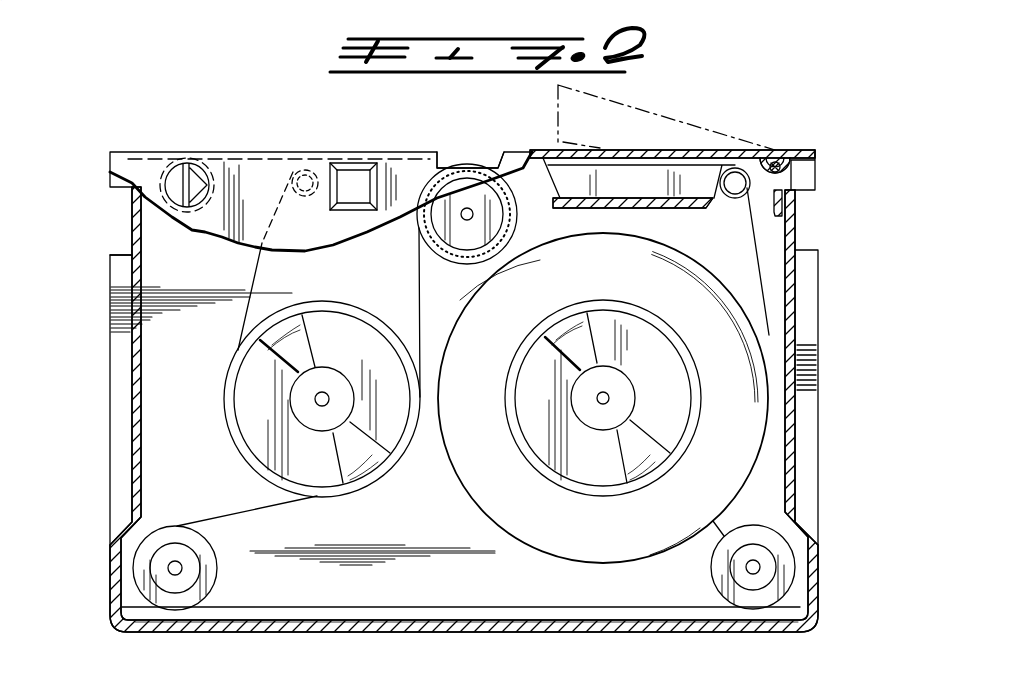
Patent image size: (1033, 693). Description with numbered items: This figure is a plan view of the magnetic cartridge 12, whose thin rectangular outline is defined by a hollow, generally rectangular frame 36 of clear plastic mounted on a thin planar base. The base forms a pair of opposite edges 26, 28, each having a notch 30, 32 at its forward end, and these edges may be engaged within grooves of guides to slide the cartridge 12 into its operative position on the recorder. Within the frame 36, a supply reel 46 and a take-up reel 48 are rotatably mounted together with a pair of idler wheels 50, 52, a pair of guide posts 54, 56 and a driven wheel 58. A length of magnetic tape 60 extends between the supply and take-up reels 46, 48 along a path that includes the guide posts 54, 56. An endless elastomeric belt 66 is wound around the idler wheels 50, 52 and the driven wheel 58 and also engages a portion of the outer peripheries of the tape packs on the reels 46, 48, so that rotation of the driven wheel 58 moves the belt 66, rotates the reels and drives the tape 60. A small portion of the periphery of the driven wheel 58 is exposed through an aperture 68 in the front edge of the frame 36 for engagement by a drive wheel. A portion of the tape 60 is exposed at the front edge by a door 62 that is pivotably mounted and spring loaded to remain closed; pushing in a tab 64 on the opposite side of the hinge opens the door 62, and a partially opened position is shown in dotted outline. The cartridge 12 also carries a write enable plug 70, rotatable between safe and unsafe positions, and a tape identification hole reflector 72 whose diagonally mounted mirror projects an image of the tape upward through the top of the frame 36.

The magnetic cartridge 12 is at (323, 150).
The opposite edge 26 is at (806, 336).
The opposite edge 28 is at (110, 350).
The notch 30 is at (805, 247).
The notch 32 is at (118, 252).
The rectangular frame 36 is at (503, 612).
The supply reel 46 is at (610, 310).
The take-up reel 48 is at (340, 308).
The idler wheel 50 is at (796, 573).
The idler wheel 52 is at (137, 583).
The guide post 54 is at (735, 180).
The guide post 56 is at (283, 158).
The driven wheel 58 is at (467, 162).
The magnetic tape 60 is at (762, 295).
The door 62 is at (608, 152).
The tab 64 is at (803, 152).
The endless elastomeric belt 66 is at (457, 610).
The aperture 68 is at (447, 150).
The write enable plug 70 is at (177, 168).
The tape identification hole reflector 72 is at (352, 173).